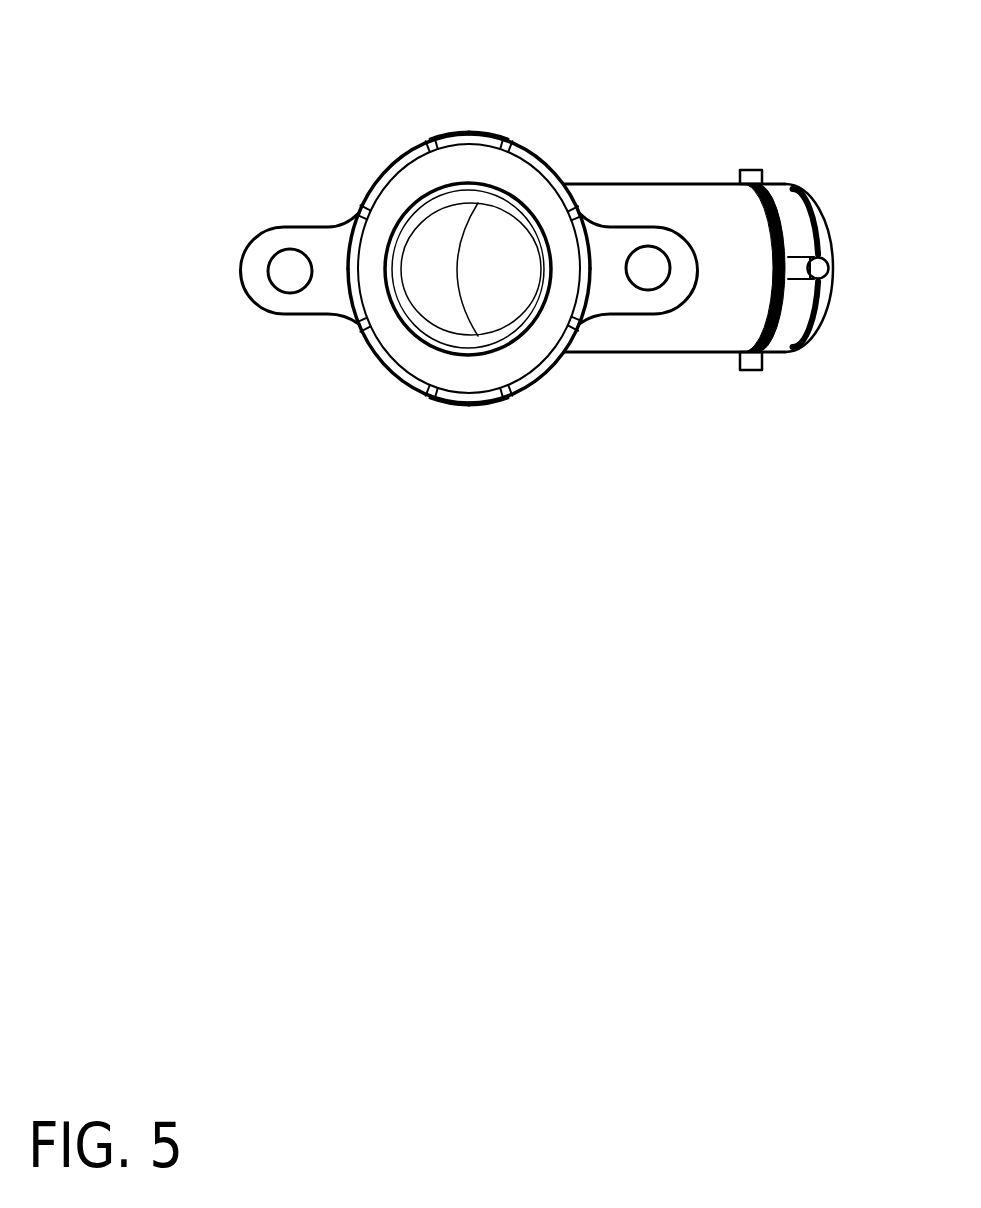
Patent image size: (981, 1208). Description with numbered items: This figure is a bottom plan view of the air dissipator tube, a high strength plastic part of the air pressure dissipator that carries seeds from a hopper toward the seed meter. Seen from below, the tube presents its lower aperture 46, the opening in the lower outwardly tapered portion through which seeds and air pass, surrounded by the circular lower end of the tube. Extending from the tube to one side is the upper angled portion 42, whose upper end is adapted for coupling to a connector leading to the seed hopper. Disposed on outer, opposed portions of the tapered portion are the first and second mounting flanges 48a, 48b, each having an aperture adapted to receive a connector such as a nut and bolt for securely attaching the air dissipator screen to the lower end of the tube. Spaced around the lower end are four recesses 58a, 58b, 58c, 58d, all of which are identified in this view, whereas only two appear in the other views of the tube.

The upper angled portion 42 is at (675, 352).
The lower aperture 46 is at (453, 152).
The first mounting flange 48a is at (288, 275).
The second mounting flange 48b is at (650, 263).
The recess 58a is at (387, 175).
The recess 58b is at (547, 172).
The recess 58c is at (561, 362).
The recess 58d is at (383, 363).